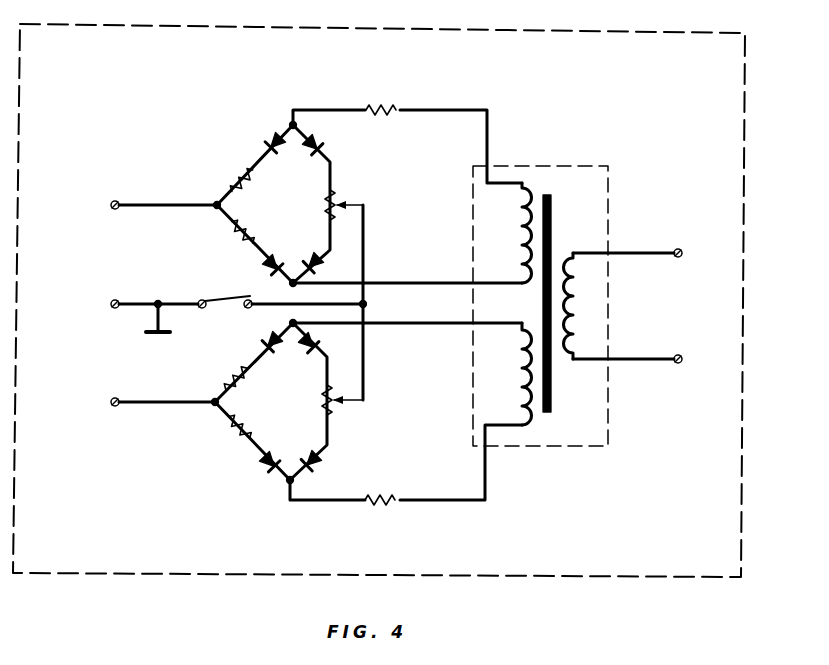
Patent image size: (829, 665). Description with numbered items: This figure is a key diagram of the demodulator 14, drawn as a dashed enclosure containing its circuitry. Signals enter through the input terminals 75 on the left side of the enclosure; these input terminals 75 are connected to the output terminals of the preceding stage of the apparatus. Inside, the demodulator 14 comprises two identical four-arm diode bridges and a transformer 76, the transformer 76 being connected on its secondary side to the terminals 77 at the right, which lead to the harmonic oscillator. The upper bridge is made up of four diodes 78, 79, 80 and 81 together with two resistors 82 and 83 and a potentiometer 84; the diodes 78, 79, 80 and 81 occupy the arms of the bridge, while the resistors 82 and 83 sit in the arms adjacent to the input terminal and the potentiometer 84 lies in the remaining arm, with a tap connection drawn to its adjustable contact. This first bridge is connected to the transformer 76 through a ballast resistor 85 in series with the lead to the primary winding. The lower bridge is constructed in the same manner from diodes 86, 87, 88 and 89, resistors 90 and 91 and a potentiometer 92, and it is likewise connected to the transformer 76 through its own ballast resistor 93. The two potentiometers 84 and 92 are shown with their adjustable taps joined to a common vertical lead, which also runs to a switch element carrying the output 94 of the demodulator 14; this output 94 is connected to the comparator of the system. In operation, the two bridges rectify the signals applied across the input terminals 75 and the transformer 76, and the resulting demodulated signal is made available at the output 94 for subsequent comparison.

The demodulator 14 is at (707, 30).
The input terminals 75 is at (115, 211).
The transformer 76 is at (618, 193).
The terminals 77 is at (681, 258).
The diode 78 is at (324, 150).
The diode 79 is at (268, 138).
The diode 80 is at (277, 258).
The diode 81 is at (323, 267).
The resistor 82 is at (236, 173).
The resistor 83 is at (238, 241).
The potentiometer 84 is at (325, 210).
The ballast resistor 85 is at (384, 104).
The diode 86 is at (262, 341).
The diode 87 is at (307, 350).
The diode 88 is at (264, 470).
The diode 89 is at (322, 467).
The resistor 90 is at (228, 377).
The resistor 91 is at (234, 430).
The potentiometer 92 is at (321, 408).
The ballast resistor 93 is at (391, 506).
The output 94 is at (210, 299).